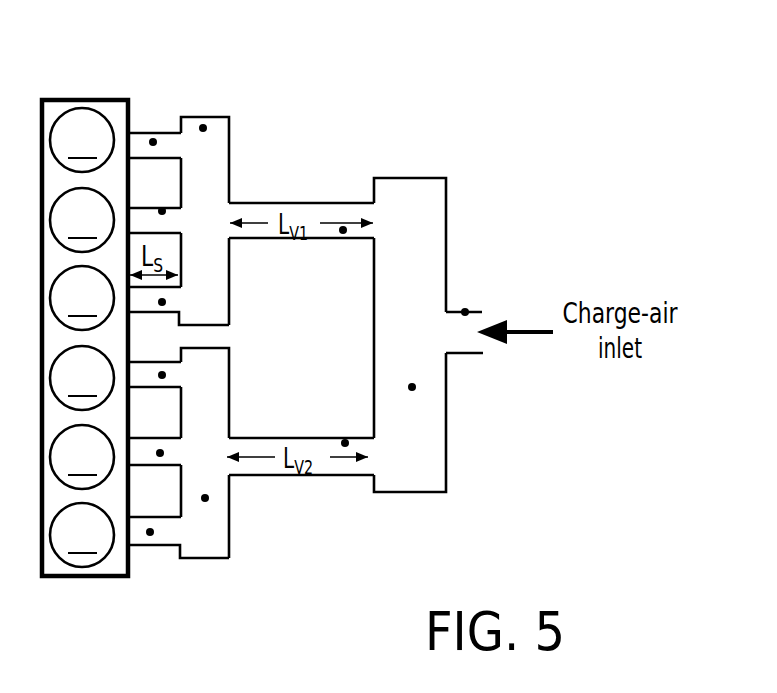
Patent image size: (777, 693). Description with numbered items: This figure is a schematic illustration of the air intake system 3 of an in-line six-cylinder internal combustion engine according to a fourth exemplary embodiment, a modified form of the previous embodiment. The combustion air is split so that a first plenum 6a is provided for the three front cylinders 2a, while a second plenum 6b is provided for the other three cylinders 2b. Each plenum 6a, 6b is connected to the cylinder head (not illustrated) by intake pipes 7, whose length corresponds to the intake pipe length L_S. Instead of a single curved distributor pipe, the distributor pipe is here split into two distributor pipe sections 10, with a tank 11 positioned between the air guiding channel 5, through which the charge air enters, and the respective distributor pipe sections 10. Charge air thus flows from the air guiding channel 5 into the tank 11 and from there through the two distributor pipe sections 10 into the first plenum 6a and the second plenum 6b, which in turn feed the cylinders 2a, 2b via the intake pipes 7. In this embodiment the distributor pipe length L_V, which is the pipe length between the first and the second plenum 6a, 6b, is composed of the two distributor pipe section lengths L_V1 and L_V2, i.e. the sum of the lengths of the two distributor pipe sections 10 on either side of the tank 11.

The front cylinders 2a is at (82, 456).
The other cylinders 2b is at (85, 338).
The air intake system 3 is at (342, 347).
The air guiding channel 5 is at (465, 312).
The first plenum 6a is at (205, 498).
The second plenum 6b is at (203, 128).
The intake pipes 7 is at (160, 453).
The distributor pipe sections 10 is at (345, 443).
The tank 11 is at (412, 387).